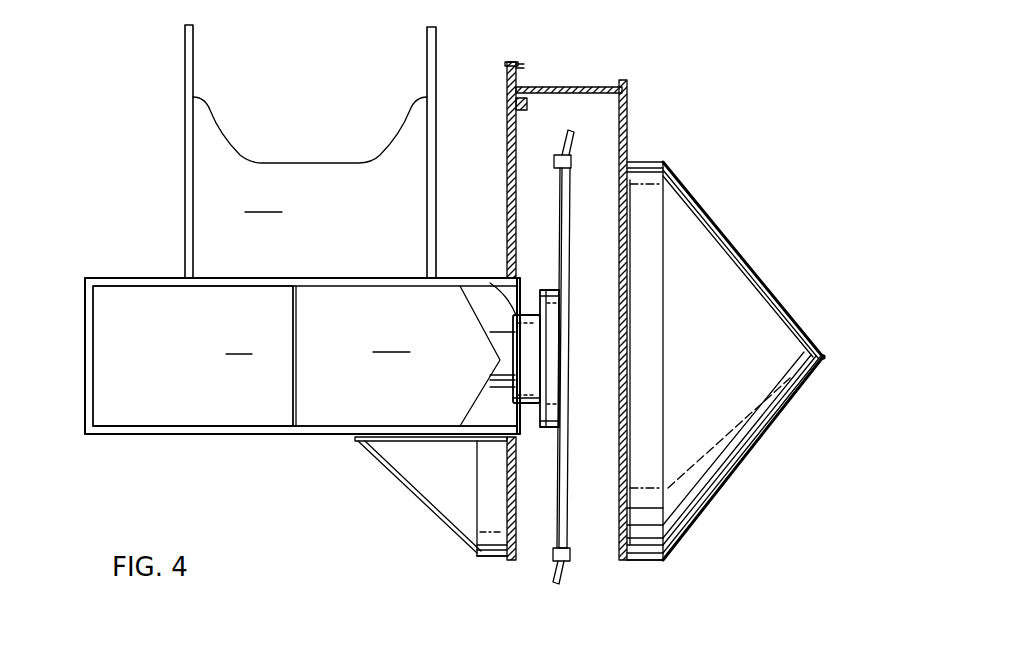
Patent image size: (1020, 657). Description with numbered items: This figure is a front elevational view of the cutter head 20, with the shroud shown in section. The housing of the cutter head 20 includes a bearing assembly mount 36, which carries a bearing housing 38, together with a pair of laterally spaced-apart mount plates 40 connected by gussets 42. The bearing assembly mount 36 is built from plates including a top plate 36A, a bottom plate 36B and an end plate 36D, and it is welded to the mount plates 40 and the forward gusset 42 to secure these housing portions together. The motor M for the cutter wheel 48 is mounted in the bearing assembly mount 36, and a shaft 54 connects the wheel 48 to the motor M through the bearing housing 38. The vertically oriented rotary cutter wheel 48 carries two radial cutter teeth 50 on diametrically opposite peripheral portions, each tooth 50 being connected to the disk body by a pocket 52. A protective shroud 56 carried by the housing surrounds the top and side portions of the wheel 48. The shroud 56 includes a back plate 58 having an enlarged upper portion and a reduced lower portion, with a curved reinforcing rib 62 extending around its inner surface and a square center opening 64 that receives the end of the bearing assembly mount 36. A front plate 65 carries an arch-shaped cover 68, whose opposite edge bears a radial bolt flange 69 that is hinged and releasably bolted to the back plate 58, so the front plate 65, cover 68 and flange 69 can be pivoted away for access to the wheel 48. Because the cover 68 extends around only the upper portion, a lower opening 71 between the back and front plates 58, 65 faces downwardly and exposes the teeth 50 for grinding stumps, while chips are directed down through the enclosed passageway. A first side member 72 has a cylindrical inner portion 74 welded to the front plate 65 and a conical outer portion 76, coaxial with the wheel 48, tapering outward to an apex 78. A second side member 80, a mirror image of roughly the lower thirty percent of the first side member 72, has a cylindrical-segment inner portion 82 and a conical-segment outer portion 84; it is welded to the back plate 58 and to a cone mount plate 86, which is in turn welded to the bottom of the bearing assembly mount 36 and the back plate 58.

The cutter head 20 is at (124, 84).
The bearing assembly mount 36 is at (139, 236).
The top plate 36A is at (150, 290).
The bottom plate 36B is at (135, 436).
The end plate 36D is at (84, 404).
The motor M is at (239, 341).
The bearing housing 38 is at (446, 356).
The mount plates 40 is at (193, 56).
The gussets 42 is at (310, 155).
The rotary cutter wheel 48 is at (569, 180).
The cutter teeth 50 is at (568, 150).
The pocket 52 is at (567, 540).
The shaft 54 is at (495, 330).
The protective shroud 56 is at (652, 124).
The back plate 58 is at (507, 130).
The curved reinforcing rib 62 is at (530, 100).
The square center opening 64 is at (520, 293).
The front plate 65 is at (635, 326).
The arch-shaped cover 68 is at (600, 88).
The radial bolt flange 69 is at (527, 70).
The lower opening 71 is at (535, 542).
The first side member 72 is at (710, 172).
The cylindrical inner portion 74 is at (652, 562).
The conical outer portion 76 is at (771, 426).
The apex 78 is at (826, 356).
The second side member 80 is at (476, 558).
The inner portion 82 is at (492, 560).
The outer portion 84 is at (430, 481).
The cone mount plate 86 is at (393, 441).